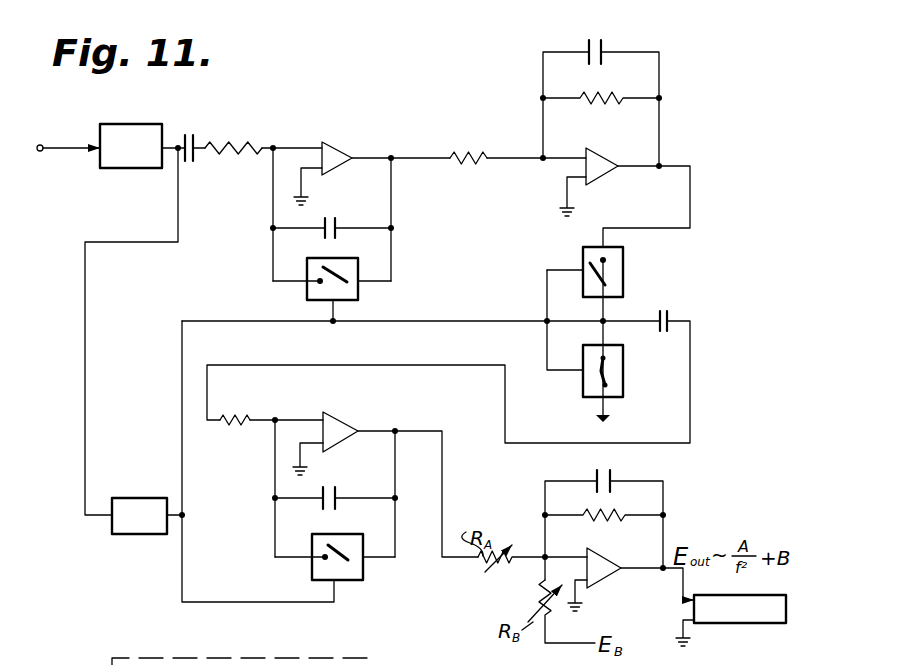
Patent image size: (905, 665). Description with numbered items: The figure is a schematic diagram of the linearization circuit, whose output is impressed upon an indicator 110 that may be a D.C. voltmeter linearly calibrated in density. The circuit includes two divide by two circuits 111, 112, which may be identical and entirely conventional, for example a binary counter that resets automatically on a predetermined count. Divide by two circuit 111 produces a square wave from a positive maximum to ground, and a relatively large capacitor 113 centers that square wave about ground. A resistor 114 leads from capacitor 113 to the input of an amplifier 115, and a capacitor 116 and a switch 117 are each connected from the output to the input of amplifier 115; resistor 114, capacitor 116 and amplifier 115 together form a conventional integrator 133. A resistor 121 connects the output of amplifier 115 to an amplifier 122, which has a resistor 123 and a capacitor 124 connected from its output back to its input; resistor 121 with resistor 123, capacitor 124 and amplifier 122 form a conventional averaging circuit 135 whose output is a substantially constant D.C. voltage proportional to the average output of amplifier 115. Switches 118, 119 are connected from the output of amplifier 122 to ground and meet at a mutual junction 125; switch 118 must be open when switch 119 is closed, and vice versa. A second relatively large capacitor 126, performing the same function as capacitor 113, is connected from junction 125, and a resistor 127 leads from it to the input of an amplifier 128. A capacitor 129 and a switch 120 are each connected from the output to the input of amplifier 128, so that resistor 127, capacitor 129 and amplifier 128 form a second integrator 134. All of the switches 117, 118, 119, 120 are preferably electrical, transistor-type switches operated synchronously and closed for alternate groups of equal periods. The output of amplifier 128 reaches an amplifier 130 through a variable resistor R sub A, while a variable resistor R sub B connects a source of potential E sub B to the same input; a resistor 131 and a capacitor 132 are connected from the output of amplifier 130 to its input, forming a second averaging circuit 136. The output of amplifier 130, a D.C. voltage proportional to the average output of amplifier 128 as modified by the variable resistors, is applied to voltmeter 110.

The indicator 110 is at (735, 624).
The divide by two circuit 111 is at (135, 124).
The divide by two circuit 112 is at (158, 497).
The capacitor 113 is at (195, 136).
The resistor 114 is at (246, 160).
The amplifier 115 is at (350, 130).
The capacitor 116 is at (336, 218).
The switch 117 is at (340, 259).
The switch 118 is at (625, 251).
The switch 119 is at (626, 375).
The switch 120 is at (350, 583).
The resistor 121 is at (471, 163).
The amplifier 122 is at (610, 170).
The resistor 123 is at (600, 100).
The resistor 124 is at (598, 58).
The mutual junction 125 is at (606, 318).
The capacitor 126 is at (670, 316).
The resistor 127 is at (254, 400).
The amplifier 128 is at (327, 413).
The capacitor 129 is at (333, 490).
The amplifier 130 is at (606, 561).
The resistor 131 is at (603, 520).
The capacitor 132 is at (615, 470).
The integrator 133 is at (368, 204).
The integrator 134 is at (349, 496).
The averaging circuit 135 is at (651, 143).
The averaging circuit 136 is at (647, 535).